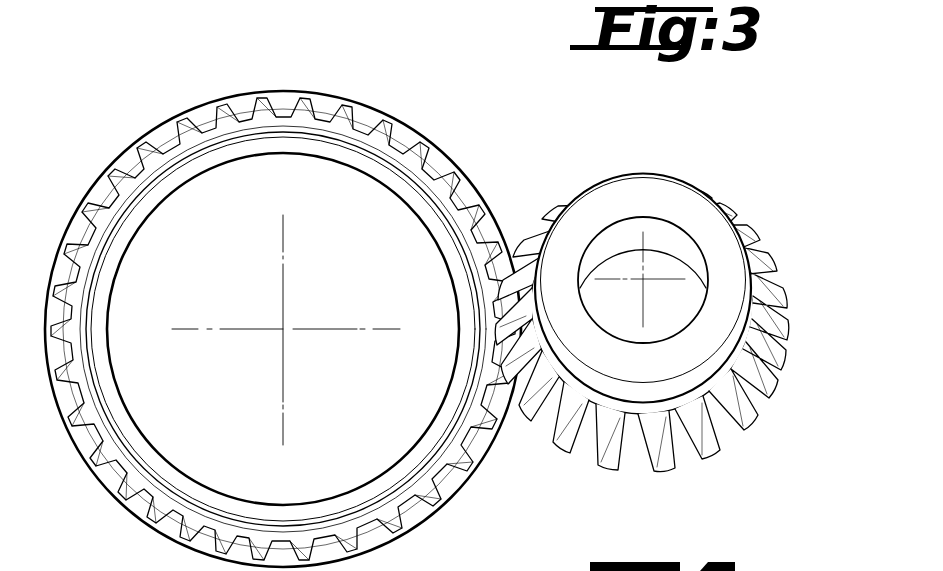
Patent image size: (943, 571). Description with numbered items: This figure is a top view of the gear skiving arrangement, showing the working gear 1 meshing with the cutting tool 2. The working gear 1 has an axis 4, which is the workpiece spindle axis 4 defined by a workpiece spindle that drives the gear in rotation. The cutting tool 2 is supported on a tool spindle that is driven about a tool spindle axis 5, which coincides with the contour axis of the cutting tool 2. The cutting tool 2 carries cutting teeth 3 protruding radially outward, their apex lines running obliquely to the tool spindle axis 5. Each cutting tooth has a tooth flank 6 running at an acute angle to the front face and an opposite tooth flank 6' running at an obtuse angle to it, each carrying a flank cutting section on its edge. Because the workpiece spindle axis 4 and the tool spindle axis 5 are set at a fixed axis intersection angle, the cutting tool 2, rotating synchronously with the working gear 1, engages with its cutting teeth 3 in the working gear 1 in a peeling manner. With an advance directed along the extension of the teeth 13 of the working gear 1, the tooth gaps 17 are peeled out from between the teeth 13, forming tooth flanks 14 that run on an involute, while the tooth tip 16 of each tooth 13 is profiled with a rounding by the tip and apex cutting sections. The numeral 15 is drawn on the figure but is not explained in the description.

The working gear 1 is at (291, 289).
The cutting tool 2 is at (665, 311).
The cutting teeth 3 is at (747, 430).
The workpiece spindle axis 4 is at (283, 329).
The tool spindle axis 5 is at (643, 278).
The tooth flank 6 is at (642, 367).
The tooth flank 6' is at (642, 361).
The teeth 13 is at (262, 98).
The tooth flanks 14 is at (343, 119).
The tooth root 15 is at (243, 119).
The tooth tip 16 is at (185, 122).
The tooth gaps 17 is at (130, 168).